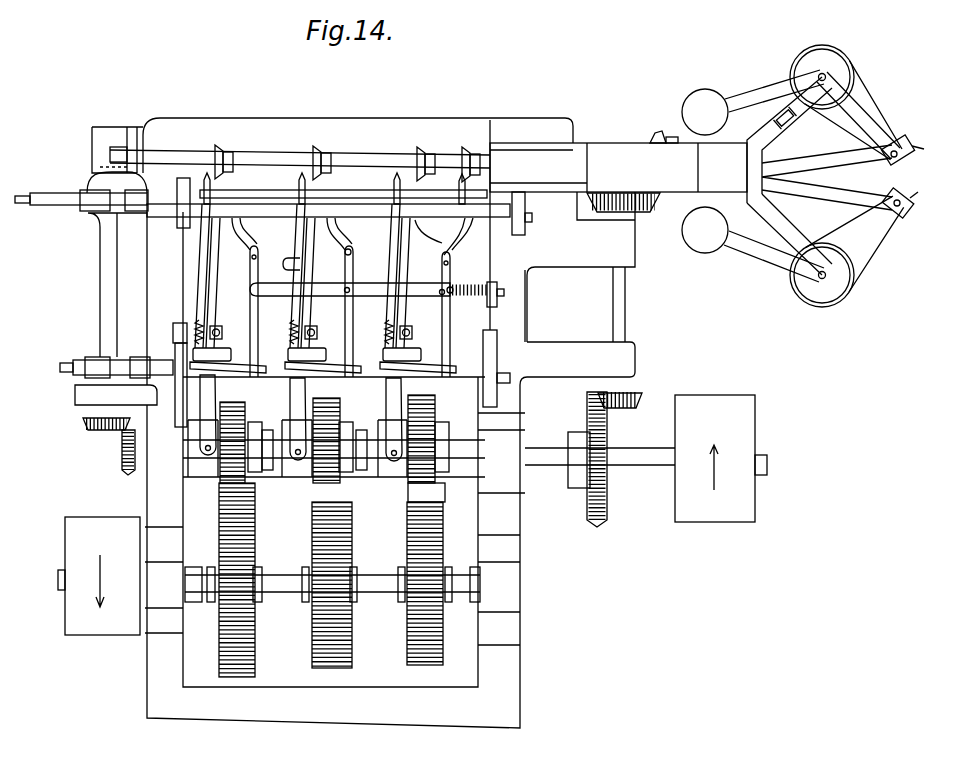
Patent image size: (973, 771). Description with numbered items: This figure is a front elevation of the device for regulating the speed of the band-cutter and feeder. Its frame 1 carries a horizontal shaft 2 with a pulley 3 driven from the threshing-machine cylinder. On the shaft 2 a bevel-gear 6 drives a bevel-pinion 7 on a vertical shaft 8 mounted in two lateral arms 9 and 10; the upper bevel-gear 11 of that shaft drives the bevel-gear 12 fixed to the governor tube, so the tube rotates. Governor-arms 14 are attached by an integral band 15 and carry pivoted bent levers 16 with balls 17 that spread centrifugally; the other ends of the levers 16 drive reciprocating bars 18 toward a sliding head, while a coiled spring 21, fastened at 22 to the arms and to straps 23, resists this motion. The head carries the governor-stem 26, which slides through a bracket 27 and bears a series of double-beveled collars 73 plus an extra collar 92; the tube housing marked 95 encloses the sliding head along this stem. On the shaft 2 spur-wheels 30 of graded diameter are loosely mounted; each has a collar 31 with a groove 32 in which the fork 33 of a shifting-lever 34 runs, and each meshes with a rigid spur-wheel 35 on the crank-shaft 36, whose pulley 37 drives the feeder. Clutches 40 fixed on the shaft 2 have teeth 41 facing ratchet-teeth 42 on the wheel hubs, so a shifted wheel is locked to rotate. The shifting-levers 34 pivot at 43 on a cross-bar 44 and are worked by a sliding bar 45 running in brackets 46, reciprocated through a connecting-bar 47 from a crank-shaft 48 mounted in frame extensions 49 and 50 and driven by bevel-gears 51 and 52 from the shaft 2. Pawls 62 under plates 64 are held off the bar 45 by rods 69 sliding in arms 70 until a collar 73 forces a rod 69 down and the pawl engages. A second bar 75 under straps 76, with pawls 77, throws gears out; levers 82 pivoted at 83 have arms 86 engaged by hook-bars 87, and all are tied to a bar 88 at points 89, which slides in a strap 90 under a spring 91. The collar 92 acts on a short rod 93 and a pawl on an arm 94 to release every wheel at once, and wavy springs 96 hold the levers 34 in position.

The frame 1 is at (252, 122).
The shaft 2 is at (623, 470).
The pulley 3 is at (750, 517).
The bevel-gear 6 is at (585, 512).
The bevel-pinion 7 is at (637, 395).
The shaft 8 is at (626, 297).
The arm 9 is at (581, 359).
The arm 10 is at (581, 267).
The bevel-gear 11 is at (650, 215).
The bevel-gear 12 is at (655, 132).
The governor-arms 14 is at (780, 233).
The integral band 15 is at (758, 159).
The levers 16 is at (868, 129).
The balls 17 is at (705, 251).
The reciprocating bars 18 is at (845, 193).
The coiled spring 21 is at (878, 98).
The spring fastening point 22 is at (790, 122).
The straps 23 is at (914, 147).
The stem 26 is at (369, 158).
The bracket 27 is at (132, 153).
The spur-wheels 30 is at (434, 502).
The collar 31 is at (396, 479).
The annular recess or groove 32 is at (300, 479).
The fork 33 is at (205, 442).
The shifting-lever 34 is at (217, 282).
The spur-wheels 35 is at (405, 548).
The crank-shaft 36 is at (380, 603).
The pulley 37 is at (99, 576).
The clutches 40 is at (365, 479).
The teeth 41 is at (268, 478).
The ratchet-teeth 42 is at (250, 427).
The pivot 43 is at (219, 333).
The cross-bar 44 is at (175, 337).
The sliding bar 45 is at (286, 217).
The brackets 46 is at (180, 189).
The connecting-bar 47 is at (62, 208).
The crank-shaft 48 is at (100, 292).
The extension 49 is at (90, 153).
The extension 50 is at (75, 402).
The bevel-gear 51 is at (88, 431).
The bevel-gear 52 is at (120, 452).
The pawl 62 is at (340, 203).
The plate 64 is at (218, 196).
The rods 69 is at (202, 241).
The arms 70 is at (290, 356).
The collars 73 is at (222, 147).
The reciprocating bar 75 is at (282, 377).
The straps 76 is at (178, 366).
The pawls 77 is at (335, 381).
The lever 82 is at (252, 319).
The pivot 83 is at (351, 253).
The arm 86 is at (250, 243).
The hook-bar 87 is at (431, 232).
The bar 88 is at (350, 304).
The pivotal points 89 is at (450, 298).
The strap 90 is at (492, 289).
The spring 91 is at (470, 288).
The extra collar 92 is at (462, 148).
The short vertical rod 93 is at (458, 197).
The arm 94 is at (478, 241).
The housing 95 is at (618, 167).
The flat wavy springs 96 is at (288, 266).